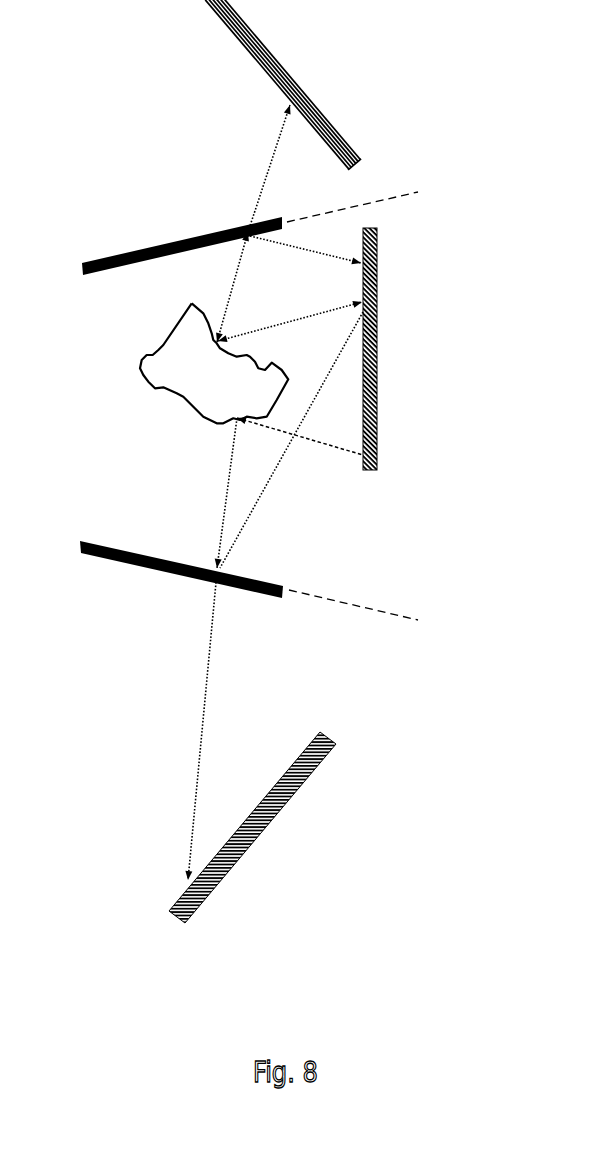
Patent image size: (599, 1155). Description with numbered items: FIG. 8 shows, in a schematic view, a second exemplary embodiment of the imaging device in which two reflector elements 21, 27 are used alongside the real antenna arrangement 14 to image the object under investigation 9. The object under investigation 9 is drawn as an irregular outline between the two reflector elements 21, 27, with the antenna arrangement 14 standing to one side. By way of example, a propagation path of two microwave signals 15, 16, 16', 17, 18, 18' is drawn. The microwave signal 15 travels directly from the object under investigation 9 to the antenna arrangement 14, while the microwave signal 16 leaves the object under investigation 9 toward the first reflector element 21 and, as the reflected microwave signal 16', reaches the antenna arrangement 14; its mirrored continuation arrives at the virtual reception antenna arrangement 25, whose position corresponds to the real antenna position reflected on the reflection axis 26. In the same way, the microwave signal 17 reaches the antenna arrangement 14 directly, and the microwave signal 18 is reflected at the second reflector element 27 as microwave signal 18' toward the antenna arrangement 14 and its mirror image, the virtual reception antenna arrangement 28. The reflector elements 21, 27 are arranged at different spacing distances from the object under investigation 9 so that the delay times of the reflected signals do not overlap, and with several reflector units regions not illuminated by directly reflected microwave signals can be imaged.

The object under investigation 9 is at (150, 379).
The antenna arrangement 14 is at (378, 350).
The microwave signal 15 is at (292, 322).
The microwave signal 16 is at (218, 287).
The microwave signal 16' is at (289, 200).
The microwave signal 17 is at (333, 447).
The microwave signal 18 is at (195, 493).
The microwave signal 18' is at (274, 596).
The first reflector element 21 is at (132, 250).
The virtual reception antenna arrangement 25 is at (258, 42).
The reflection axis 26 is at (387, 202).
The second reflector element 27 is at (130, 562).
The virtual reception antenna arrangement 28 is at (270, 817).